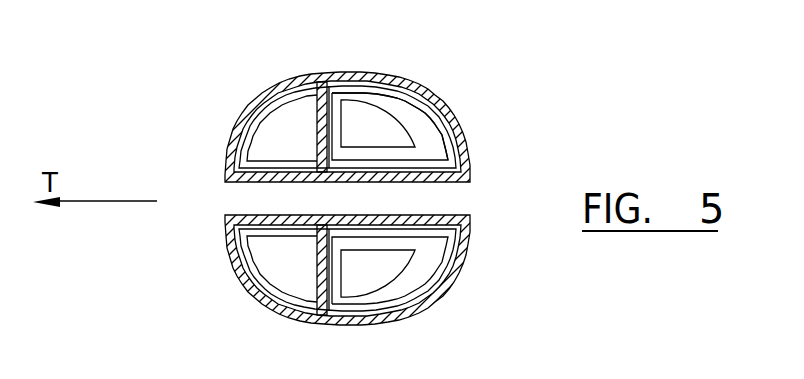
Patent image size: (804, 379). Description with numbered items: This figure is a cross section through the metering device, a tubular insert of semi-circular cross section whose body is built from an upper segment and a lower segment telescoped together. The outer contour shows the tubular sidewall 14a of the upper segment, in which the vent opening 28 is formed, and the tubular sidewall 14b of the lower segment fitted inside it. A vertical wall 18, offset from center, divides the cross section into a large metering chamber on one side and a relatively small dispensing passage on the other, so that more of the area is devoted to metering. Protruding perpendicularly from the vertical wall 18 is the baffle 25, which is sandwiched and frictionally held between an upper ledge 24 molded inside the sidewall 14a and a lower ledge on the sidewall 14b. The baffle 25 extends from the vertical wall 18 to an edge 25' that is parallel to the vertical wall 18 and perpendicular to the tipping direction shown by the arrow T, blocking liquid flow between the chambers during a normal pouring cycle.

The tubular sidewall of upper segment 14a is at (289, 87).
The tubular sidewall of lower segment 14b is at (256, 137).
The vertical wall 18 is at (333, 102).
The upper ledge 24 is at (367, 103).
The baffle 25 is at (378, 198).
The edge of baffle 25' is at (440, 118).
The vent opening 28 is at (460, 157).